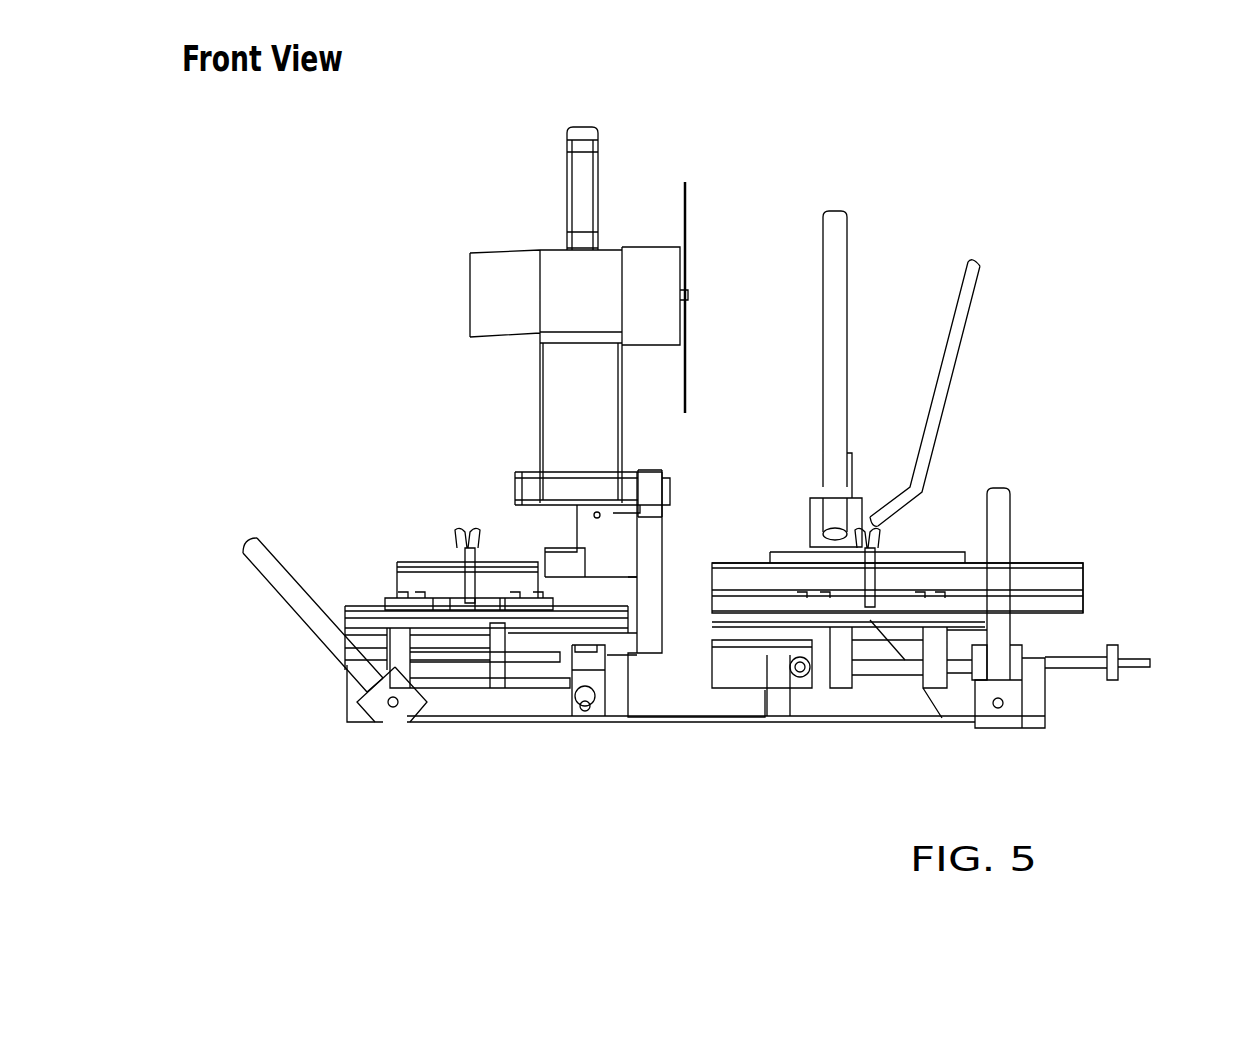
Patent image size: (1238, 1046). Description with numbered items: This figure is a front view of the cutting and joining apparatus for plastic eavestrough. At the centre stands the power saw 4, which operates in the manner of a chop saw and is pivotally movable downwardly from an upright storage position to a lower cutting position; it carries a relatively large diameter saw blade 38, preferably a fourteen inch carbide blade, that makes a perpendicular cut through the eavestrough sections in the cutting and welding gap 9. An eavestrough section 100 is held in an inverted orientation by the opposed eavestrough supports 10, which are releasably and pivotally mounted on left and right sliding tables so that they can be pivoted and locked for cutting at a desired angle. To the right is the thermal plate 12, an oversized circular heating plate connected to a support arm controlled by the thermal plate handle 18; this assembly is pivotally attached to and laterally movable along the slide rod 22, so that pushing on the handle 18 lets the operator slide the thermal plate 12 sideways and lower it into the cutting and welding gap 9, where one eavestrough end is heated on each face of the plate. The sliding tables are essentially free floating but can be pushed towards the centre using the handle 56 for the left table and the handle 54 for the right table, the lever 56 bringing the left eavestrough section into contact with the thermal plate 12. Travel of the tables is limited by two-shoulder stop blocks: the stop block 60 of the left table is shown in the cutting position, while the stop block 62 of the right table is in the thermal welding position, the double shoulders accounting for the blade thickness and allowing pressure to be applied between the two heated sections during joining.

The power saw 4 is at (470, 382).
The cutting and welding gap 9 is at (687, 657).
The eavestrough supports 10 is at (490, 615).
The thermal plate 12 is at (830, 323).
The thermal plate handle 18 is at (953, 358).
The slide rod 22 is at (1080, 662).
The saw blade 38 is at (685, 217).
The handle 54 is at (1000, 525).
The handle 56 is at (297, 617).
The stop block 60 is at (580, 673).
The stop block 62 is at (815, 690).
The eavestrough section 100 is at (1045, 570).